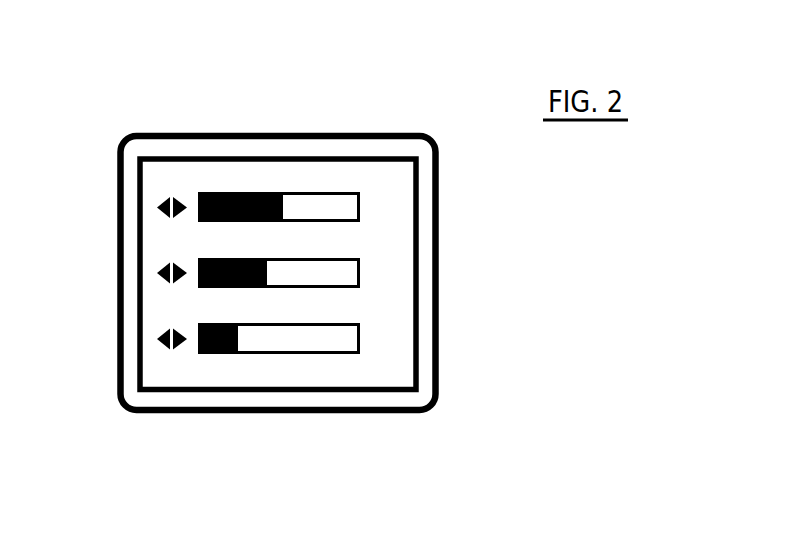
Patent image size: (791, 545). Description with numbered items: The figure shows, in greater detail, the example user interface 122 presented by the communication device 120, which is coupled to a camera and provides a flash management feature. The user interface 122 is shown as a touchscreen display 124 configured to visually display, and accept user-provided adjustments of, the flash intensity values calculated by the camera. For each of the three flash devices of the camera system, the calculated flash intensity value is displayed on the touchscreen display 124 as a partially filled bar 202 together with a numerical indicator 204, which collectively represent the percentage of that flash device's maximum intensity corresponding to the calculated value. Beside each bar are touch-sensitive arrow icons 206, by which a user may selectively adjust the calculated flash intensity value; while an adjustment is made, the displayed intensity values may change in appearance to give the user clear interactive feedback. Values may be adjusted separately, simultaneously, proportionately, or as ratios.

The communication device 120 is at (439, 161).
The user interface 122 is at (292, 148).
The touchscreen display 124 is at (183, 157).
The partially filled bar 202 is at (303, 222).
The numerical indicator 204 is at (385, 217).
The touch-sensitive arrow icons 206 is at (166, 194).